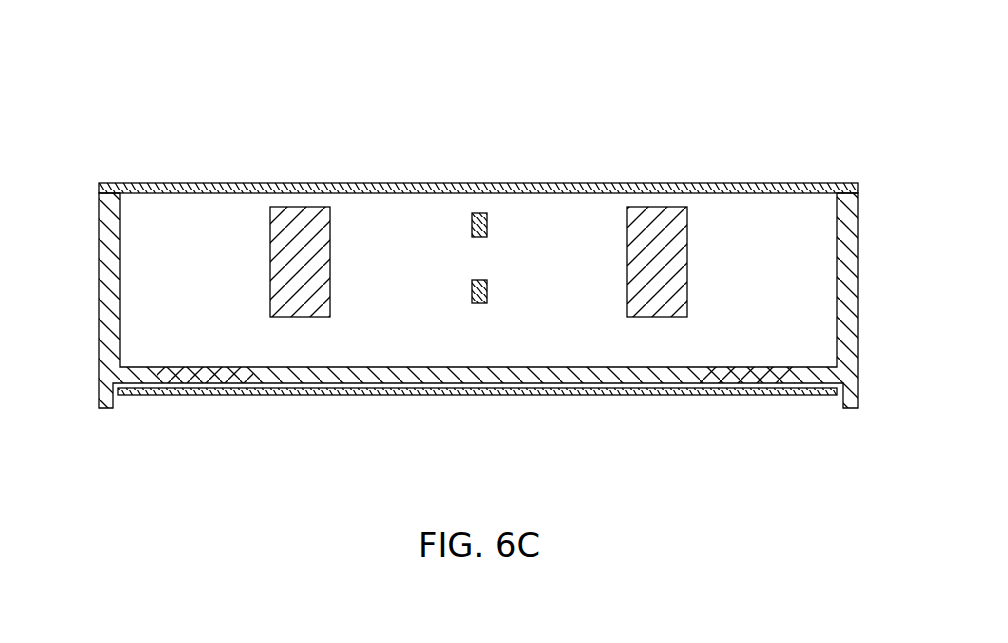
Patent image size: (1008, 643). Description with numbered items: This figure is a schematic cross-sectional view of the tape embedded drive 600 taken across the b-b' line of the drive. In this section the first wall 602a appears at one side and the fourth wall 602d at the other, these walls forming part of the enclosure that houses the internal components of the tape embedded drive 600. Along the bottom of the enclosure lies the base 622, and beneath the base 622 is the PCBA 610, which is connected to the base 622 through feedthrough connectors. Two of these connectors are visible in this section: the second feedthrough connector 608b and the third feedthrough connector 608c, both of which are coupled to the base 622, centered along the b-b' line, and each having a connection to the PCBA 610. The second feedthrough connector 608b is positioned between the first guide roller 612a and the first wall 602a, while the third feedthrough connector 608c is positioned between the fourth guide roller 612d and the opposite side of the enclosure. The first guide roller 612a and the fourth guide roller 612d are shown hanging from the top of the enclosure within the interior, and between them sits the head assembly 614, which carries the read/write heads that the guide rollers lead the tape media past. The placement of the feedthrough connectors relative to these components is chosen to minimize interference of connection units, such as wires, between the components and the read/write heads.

The tape embedded drive 600 is at (143, 80).
The first wall 602a is at (99, 268).
The fourth wall 602d is at (858, 279).
The second feedthrough connector 608b is at (170, 375).
The third feedthrough connector 608c is at (792, 377).
The PCBA 610 is at (458, 395).
The first guide roller 612a is at (284, 207).
The fourth guide roller 612d is at (648, 207).
The head assembly 614 is at (472, 293).
The base 622 is at (350, 383).